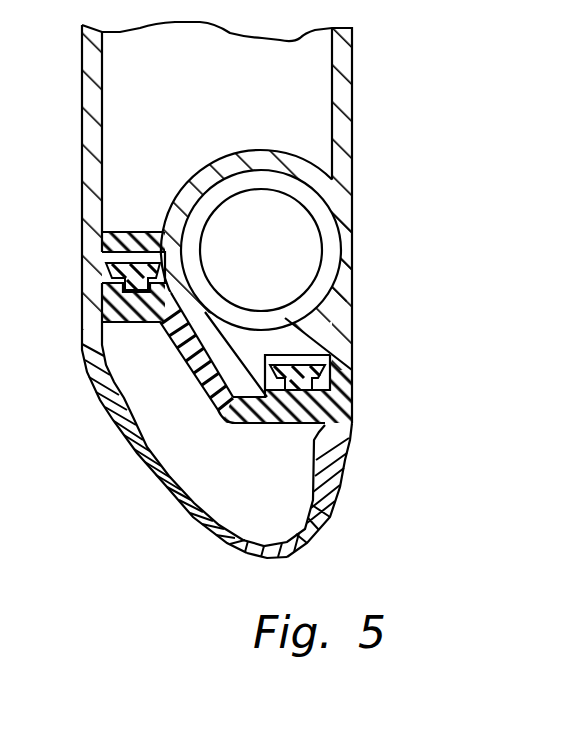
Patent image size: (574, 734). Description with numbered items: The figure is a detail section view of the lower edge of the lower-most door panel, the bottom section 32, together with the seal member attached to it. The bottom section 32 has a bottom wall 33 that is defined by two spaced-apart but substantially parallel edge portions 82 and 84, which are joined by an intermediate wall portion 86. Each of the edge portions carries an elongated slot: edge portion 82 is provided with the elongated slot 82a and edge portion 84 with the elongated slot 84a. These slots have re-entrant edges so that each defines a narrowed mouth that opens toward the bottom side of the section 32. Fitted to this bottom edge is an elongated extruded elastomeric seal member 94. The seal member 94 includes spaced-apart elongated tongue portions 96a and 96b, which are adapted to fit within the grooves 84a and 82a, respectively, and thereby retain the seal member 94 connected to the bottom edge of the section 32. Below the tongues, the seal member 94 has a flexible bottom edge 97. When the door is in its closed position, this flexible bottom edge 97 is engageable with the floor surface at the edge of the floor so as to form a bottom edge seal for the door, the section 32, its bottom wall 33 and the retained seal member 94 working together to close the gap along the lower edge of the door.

The bottom section 32 is at (352, 97).
The bottom wall 33 is at (192, 375).
The edge portion 82 is at (330, 422).
The elongated slot 82a is at (313, 378).
The edge portion 84 is at (82, 317).
The elongated slot 84a is at (110, 281).
The intermediate wall portion 86 is at (212, 332).
The seal member 94 is at (183, 513).
The tongue portion 96a is at (143, 258).
The tongue portion 96b is at (305, 377).
The flexible bottom edge 97 is at (244, 552).